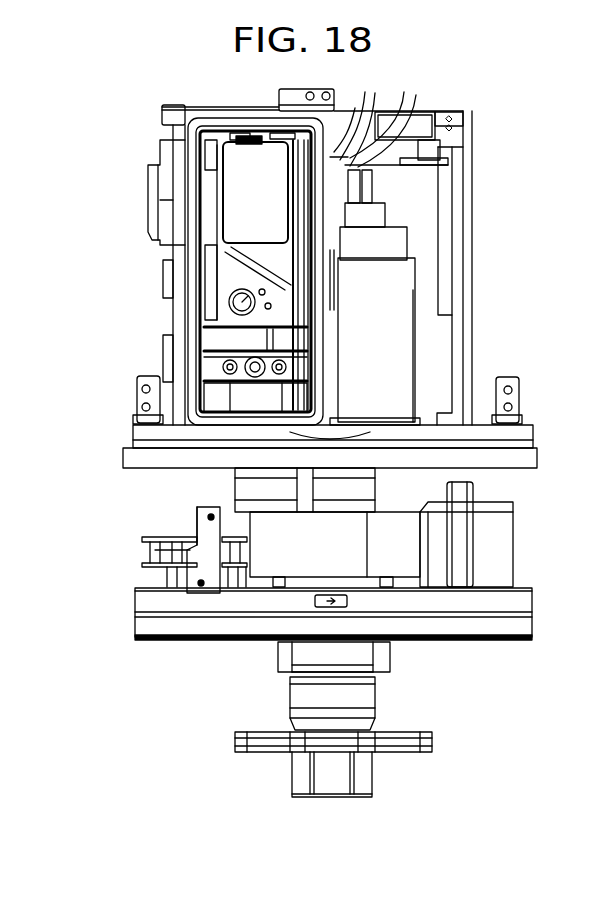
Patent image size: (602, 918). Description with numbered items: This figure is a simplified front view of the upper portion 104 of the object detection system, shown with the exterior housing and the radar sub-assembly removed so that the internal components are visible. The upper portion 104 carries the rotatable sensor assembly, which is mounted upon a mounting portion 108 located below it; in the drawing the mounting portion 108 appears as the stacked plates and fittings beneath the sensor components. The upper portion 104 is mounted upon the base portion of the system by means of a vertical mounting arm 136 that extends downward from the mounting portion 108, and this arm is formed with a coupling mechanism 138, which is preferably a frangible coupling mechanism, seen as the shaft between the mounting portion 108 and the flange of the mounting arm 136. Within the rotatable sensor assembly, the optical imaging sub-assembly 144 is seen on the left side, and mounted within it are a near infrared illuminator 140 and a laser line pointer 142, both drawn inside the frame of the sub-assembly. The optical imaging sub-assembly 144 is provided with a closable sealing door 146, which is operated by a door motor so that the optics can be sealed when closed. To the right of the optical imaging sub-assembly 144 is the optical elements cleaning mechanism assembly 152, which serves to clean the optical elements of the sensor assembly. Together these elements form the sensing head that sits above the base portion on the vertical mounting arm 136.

The upper portion 104 is at (508, 219).
The mounting portion 108 is at (112, 447).
The vertical mounting arm 136 is at (407, 773).
The coupling mechanism 138 is at (308, 692).
The near infrared illuminator 140 is at (228, 299).
The laser line pointer 142 is at (240, 382).
The optical imaging sub-assembly 144 is at (160, 209).
The closable sealing door 146 is at (288, 183).
The optical elements cleaning mechanism assembly 152 is at (385, 313).